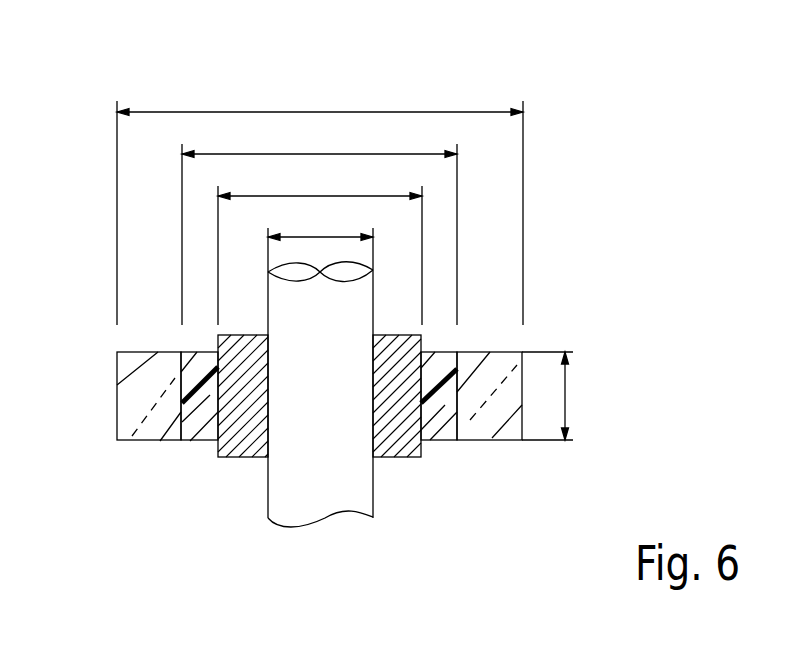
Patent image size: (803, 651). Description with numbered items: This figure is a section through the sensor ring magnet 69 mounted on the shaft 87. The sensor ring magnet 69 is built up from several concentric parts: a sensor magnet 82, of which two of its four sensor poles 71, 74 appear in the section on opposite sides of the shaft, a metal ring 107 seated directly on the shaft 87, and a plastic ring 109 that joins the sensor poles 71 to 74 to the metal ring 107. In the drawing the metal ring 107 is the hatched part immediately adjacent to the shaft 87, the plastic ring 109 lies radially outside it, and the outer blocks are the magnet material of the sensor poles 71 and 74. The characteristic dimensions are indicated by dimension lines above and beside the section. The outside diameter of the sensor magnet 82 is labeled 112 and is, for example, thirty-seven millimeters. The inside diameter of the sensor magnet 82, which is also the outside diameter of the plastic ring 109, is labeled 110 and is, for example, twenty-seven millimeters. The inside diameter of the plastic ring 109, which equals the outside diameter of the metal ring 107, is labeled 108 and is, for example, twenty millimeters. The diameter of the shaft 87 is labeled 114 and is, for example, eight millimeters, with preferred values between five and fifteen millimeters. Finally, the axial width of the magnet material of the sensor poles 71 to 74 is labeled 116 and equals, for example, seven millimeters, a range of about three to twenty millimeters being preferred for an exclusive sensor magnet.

The sensor ring magnet 69 is at (529, 345).
The sensor pole 71 is at (513, 441).
The sensor pole 74 is at (137, 441).
The sensor magnet 82 is at (130, 395).
The shaft 87 is at (290, 490).
The metal ring 107 is at (398, 442).
The inside diameter of plastic ring 108 is at (375, 196).
The plastic ring 109 is at (434, 441).
The inside diameter of sensor magnet 110 is at (230, 154).
The outside diameter of sensor magnet 112 is at (160, 112).
The diameter of shaft 114 is at (300, 236).
The width of magnet material 116 is at (565, 396).